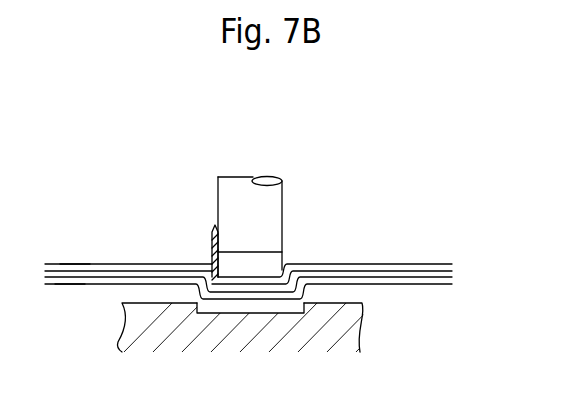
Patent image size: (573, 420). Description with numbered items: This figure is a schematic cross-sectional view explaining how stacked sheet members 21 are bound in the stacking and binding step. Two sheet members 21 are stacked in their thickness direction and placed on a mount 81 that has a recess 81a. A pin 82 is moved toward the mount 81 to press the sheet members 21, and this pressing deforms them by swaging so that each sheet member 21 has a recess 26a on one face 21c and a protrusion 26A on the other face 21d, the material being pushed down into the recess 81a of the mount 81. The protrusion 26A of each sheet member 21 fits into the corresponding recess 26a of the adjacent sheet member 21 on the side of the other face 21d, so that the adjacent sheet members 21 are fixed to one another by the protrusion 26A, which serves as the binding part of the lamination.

The pin 82 is at (278, 195).
The sheet member 21 is at (453, 267).
The one face 21c is at (72, 264).
The other face 21d is at (66, 284).
The recess 26a is at (215, 232).
The protrusion 26A is at (297, 301).
The mount 81 is at (359, 343).
The recess 81a is at (236, 313).